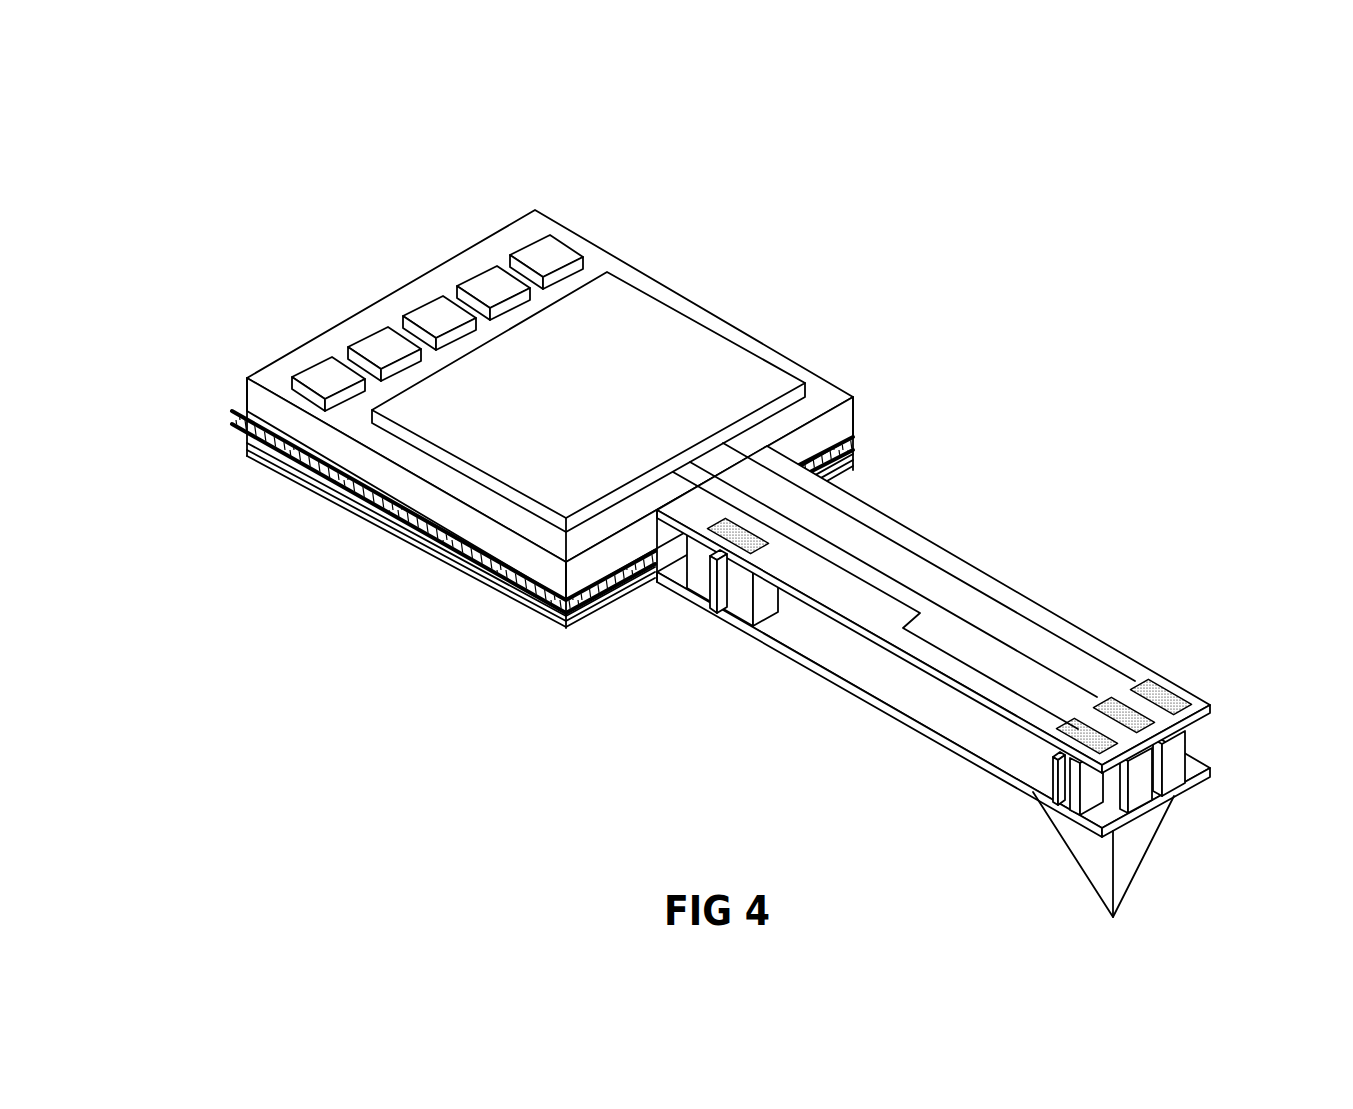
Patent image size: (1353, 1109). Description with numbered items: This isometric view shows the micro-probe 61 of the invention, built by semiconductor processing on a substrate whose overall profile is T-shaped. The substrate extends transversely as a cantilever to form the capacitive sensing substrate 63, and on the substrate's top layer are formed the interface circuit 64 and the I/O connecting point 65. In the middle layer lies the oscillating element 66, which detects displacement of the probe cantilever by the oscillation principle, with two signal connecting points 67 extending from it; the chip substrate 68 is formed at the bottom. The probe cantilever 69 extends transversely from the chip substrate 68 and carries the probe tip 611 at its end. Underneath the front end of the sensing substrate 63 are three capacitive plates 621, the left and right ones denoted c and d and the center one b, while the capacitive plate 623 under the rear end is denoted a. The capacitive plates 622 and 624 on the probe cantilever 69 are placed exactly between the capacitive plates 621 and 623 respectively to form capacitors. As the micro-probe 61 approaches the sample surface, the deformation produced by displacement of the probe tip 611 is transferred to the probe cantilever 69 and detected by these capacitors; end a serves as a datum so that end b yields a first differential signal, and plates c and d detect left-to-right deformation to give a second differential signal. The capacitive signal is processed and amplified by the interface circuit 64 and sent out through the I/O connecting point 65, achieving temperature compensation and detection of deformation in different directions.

The micro-probe 61 is at (892, 406).
The probe tip 611 is at (1135, 833).
The capacitive plate 621 is at (1173, 757).
The capacitive plate 622 is at (1060, 778).
The capacitive plate 623 is at (707, 571).
The capacitive plate 624 is at (722, 600).
The capacitive sensing substrate 63 is at (970, 574).
The interface circuit 64 is at (637, 321).
The I/O connecting point 65 is at (575, 243).
The oscillating element 66 is at (405, 520).
The signal connecting point 67 is at (232, 412).
The chip substrate 68 is at (476, 573).
The probe cantilever 69 is at (870, 701).